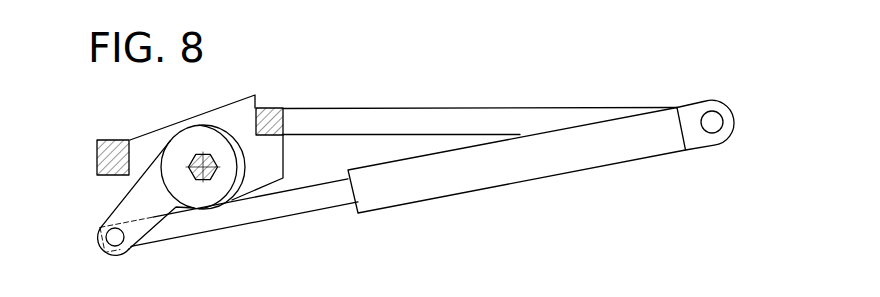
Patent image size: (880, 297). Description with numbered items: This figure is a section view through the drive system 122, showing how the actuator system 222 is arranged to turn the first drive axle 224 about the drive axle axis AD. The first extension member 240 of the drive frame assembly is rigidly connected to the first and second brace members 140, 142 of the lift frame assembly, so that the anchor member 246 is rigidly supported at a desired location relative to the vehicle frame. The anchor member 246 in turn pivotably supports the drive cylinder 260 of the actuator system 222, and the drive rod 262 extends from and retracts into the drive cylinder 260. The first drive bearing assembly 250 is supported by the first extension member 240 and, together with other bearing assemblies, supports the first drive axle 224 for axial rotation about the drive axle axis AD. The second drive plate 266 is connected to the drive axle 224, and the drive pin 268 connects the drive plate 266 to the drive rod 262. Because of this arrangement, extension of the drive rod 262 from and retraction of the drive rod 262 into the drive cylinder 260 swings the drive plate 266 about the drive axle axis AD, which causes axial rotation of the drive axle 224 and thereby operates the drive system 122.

The drive system 122 is at (408, 223).
The first brace member 140 is at (97, 166).
The second brace member 142 is at (268, 108).
The actuator system 222 is at (593, 197).
The first drive axle 224 is at (212, 175).
The first extension member 240 is at (396, 118).
The anchor member 246 is at (712, 117).
The first drive bearing assembly 250 is at (243, 178).
The drive cylinder 260 is at (500, 173).
The drive rod 262 is at (332, 206).
The second drive plate 266 is at (132, 200).
The drive pin 268 is at (107, 239).
The drive axle axis AD is at (193, 158).